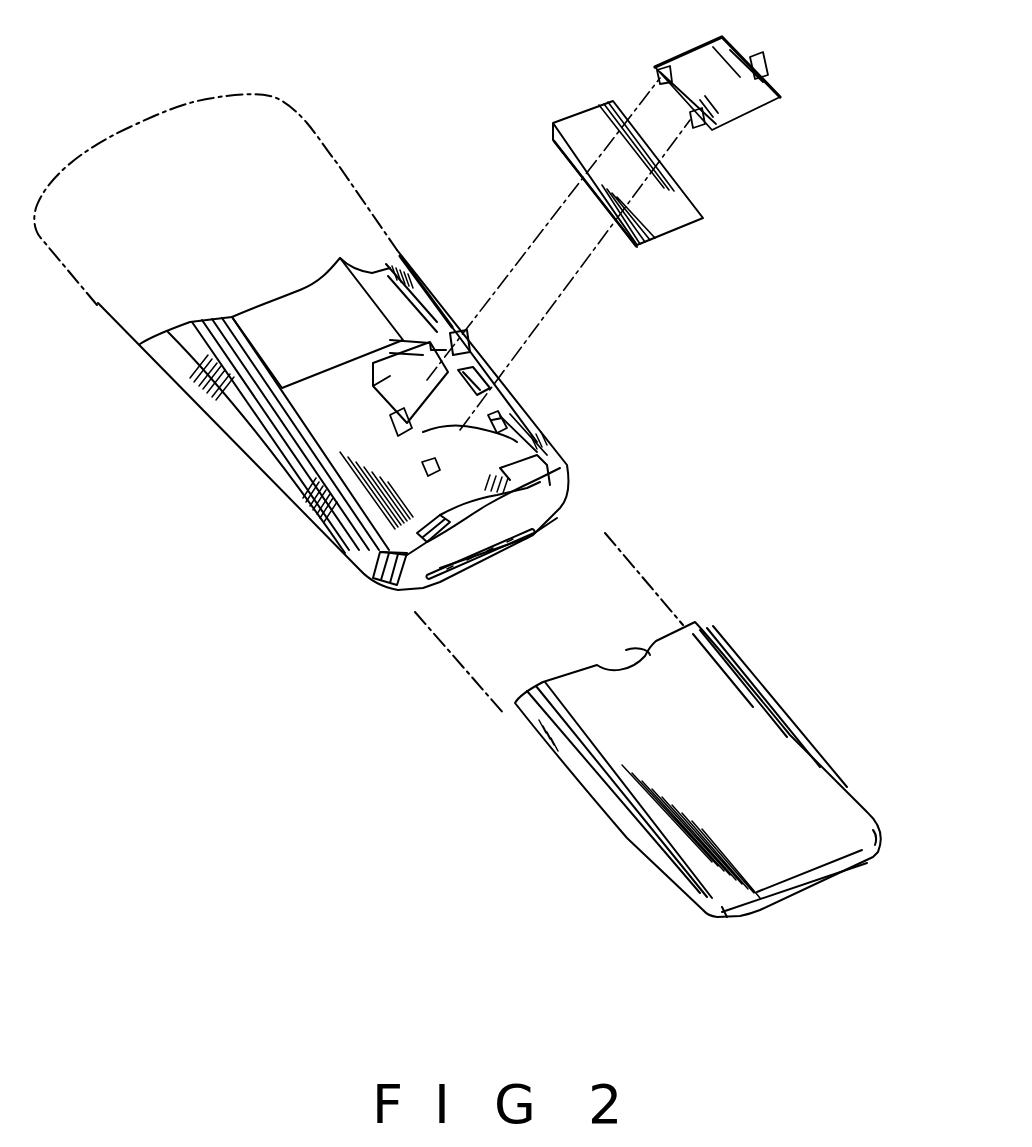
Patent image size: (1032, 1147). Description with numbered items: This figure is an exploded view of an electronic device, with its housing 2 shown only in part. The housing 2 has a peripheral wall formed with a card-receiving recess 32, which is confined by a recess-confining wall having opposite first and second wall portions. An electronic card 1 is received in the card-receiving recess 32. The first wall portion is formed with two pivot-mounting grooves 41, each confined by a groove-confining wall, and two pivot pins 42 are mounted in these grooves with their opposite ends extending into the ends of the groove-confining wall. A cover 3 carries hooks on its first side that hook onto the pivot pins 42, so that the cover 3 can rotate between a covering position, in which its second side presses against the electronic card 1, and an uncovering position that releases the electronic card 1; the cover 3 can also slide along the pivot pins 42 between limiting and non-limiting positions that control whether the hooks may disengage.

The electronic card 1 is at (516, 152).
The housing 2 is at (238, 519).
The cover 3 is at (632, 71).
The pivot-mounting groove 41 is at (428, 468).
The pivot pin 42 is at (513, 432).
The card-receiving recess 32 is at (556, 456).